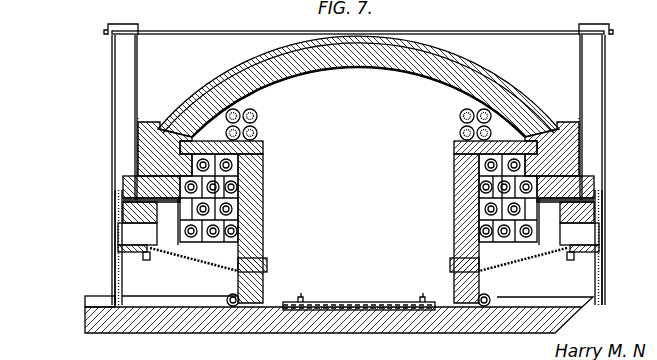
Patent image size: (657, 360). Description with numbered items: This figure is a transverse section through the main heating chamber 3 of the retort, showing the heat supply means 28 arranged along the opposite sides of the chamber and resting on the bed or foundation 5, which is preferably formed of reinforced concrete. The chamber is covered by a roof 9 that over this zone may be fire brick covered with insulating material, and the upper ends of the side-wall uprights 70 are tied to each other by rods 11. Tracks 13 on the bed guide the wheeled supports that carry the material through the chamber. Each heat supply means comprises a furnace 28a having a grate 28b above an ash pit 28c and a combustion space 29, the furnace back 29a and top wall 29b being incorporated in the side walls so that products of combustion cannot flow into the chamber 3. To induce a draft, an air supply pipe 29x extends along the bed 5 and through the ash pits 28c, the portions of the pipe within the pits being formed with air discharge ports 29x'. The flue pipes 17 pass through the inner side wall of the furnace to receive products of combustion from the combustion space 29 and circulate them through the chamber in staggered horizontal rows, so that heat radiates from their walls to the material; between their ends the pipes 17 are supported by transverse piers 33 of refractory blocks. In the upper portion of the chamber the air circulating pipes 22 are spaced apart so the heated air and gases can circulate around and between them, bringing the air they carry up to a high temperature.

The main heating chamber 3 is at (359, 235).
The bed or foundation 5 is at (143, 326).
The roof 9 is at (360, 62).
The rod 11 is at (201, 32).
The track 13 is at (302, 297).
The flue pipe 17 is at (263, 158).
The air circulating pipe 22 is at (258, 131).
The heat supply means 28 is at (379, 221).
The furnace 28a is at (602, 265).
The grate 28b is at (182, 261).
The ash pit 28c is at (135, 283).
The combustion space 29 is at (165, 209).
The furnace back 29a is at (266, 183).
The top wall 29b is at (188, 113).
The air supply pipe 29x is at (346, 309).
The air discharge port 29x' is at (358, 277).
The transverse pier 33 is at (233, 210).
The upright post 70 is at (117, 87).